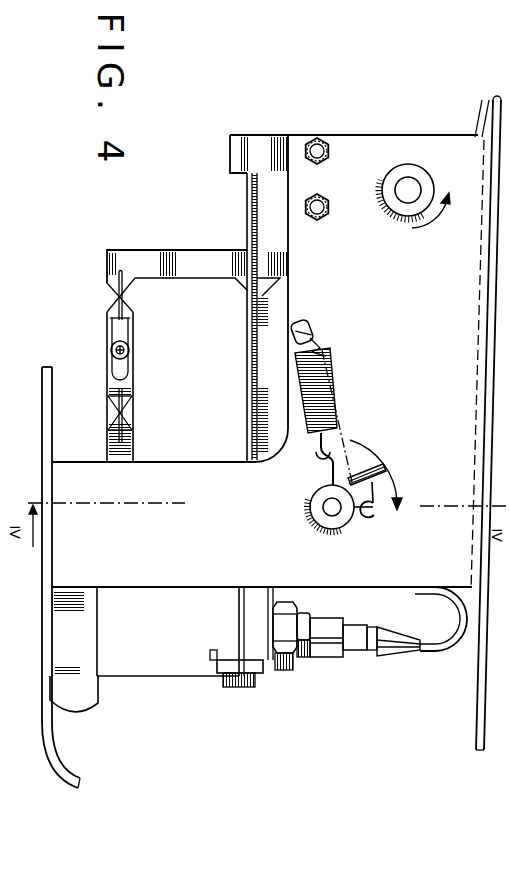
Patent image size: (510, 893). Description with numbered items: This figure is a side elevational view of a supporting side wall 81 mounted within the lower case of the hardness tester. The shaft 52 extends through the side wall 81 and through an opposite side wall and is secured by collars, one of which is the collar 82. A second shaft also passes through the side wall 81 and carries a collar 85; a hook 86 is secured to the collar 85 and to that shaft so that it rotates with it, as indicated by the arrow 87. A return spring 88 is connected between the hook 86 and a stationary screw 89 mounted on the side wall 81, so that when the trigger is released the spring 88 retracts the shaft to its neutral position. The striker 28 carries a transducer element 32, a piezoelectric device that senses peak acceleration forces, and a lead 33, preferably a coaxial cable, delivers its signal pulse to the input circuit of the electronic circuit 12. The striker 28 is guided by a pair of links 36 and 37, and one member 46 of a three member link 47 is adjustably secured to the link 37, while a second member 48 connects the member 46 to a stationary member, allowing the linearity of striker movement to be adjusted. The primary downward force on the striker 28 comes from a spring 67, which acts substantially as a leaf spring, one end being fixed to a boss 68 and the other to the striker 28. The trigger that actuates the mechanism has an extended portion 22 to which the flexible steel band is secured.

The electronic circuit 12 is at (478, 124).
The extended portion 22 is at (40, 750).
The striker 28 is at (173, 667).
The transducer element 32 is at (322, 661).
The lead 33 is at (437, 649).
The link 36 is at (240, 395).
The link 37 is at (131, 412).
The member 46 is at (107, 378).
The three member link 47 is at (103, 428).
The second member 48 is at (128, 441).
The shaft 52 is at (409, 194).
The spring 67 is at (246, 237).
The boss 68 is at (238, 158).
The supporting side wall 81 is at (351, 148).
The collar 82 is at (393, 208).
The collar 85 is at (312, 507).
The hook 86 is at (320, 472).
The arrow 87 is at (386, 470).
The return spring 88 is at (334, 387).
The stationary screw 89 is at (318, 322).